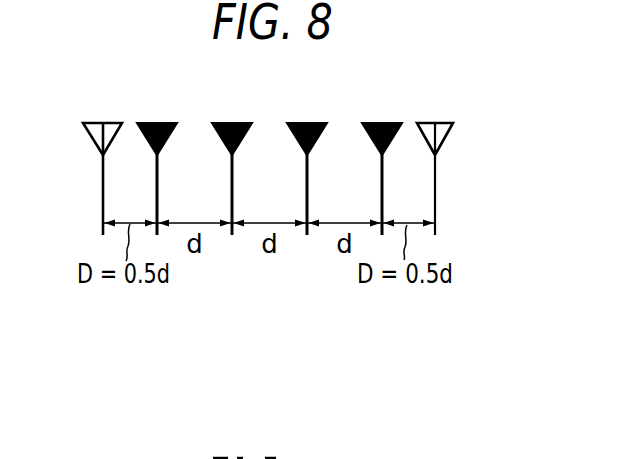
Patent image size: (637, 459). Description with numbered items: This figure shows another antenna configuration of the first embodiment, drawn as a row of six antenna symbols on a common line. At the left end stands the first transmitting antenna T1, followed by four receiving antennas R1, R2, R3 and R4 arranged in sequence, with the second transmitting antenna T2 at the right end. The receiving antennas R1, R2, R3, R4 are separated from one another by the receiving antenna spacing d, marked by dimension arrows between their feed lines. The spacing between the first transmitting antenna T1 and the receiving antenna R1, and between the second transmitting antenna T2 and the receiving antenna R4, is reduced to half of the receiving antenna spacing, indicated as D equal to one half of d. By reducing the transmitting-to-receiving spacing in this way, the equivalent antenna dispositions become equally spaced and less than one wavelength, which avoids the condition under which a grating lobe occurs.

The first transmitting antenna T1 is at (94, 179).
The receiving antenna R1 is at (165, 179).
The receiving antenna R2 is at (241, 179).
The receiving antenna R3 is at (316, 179).
The receiving antenna R4 is at (391, 179).
The second transmitting antenna T2 is at (444, 179).